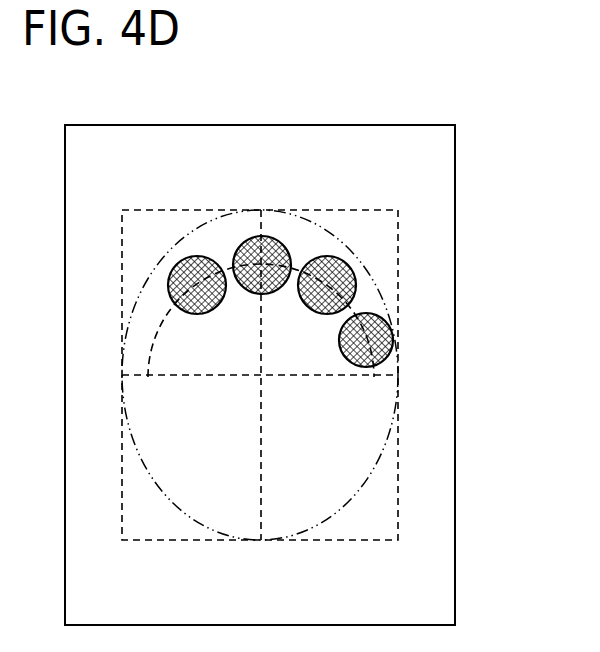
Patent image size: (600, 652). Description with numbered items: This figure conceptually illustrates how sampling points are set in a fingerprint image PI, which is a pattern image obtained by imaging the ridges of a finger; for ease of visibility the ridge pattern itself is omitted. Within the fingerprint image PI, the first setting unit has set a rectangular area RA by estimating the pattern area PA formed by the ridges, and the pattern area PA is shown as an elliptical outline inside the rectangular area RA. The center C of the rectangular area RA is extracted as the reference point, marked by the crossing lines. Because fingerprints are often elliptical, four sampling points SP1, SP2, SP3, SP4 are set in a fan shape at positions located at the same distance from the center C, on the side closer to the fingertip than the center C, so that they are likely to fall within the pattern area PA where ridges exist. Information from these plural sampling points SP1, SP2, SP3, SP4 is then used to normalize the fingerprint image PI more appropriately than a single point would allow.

The fingerprint image PI is at (344, 125).
The rectangular area RA is at (148, 210).
The pattern area PA is at (333, 211).
The center C is at (264, 388).
The sampling point SP1 is at (176, 266).
The sampling point SP2 is at (243, 243).
The sampling point SP3 is at (373, 247).
The sampling point SP4 is at (378, 315).